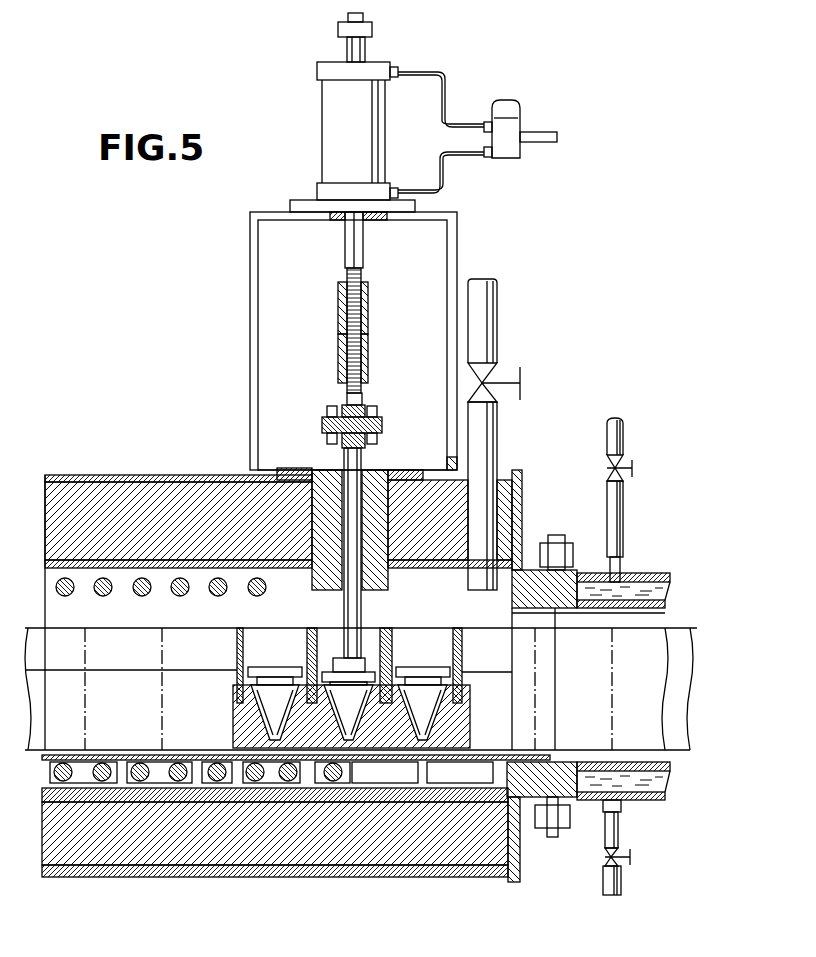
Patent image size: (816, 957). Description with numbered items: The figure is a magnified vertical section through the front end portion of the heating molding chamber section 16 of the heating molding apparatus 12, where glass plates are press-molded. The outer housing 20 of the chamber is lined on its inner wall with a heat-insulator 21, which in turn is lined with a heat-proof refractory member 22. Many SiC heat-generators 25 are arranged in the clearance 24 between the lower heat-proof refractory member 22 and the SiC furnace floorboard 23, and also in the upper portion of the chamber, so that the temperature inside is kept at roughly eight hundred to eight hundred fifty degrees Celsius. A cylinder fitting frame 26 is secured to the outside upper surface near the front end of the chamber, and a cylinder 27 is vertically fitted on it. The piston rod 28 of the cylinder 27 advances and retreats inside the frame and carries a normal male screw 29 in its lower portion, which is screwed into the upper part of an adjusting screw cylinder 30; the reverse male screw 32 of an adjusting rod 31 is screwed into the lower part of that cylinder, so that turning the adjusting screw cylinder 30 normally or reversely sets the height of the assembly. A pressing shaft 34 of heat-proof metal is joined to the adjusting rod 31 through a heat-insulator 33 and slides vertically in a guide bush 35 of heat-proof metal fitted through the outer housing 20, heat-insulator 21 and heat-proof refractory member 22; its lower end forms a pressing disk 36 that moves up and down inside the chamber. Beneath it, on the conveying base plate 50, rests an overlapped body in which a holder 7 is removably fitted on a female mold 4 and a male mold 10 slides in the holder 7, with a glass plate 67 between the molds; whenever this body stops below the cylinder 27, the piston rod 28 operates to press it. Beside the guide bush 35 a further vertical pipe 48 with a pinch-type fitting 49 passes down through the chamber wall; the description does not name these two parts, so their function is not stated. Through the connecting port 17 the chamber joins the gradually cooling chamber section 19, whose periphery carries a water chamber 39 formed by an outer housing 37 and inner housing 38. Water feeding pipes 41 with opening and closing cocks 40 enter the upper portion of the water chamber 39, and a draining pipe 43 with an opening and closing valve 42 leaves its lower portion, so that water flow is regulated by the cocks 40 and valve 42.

The female mold 4 is at (262, 725).
The holder 7 is at (237, 677).
The male mold 10 is at (292, 668).
The heating molding apparatus 12 is at (52, 475).
The heating molding chamber section 16 is at (157, 575).
The connecting port 17 is at (530, 570).
The gradually cooling chamber section 19 is at (654, 623).
The outer housing 20 is at (68, 475).
The heat-insulator 21 is at (112, 495).
The heat-proof refractory member 22 is at (178, 560).
The SiC furnace floorboard 23 is at (342, 706).
The clearance 24 is at (395, 778).
The SiC heat-generators 25 is at (66, 578).
The cylinder fitting frame 26 is at (250, 330).
The cylinder 27 is at (332, 128).
The piston rod 28 is at (365, 233).
The normal male screw 29 is at (340, 293).
The adjusting screw cylinder 30 is at (368, 310).
The adjusting rod 31 is at (345, 393).
The reverse male screw 32 is at (368, 347).
The heat-insulator 33 is at (325, 425).
The pressing shaft 34 is at (342, 452).
The guide bush 35 is at (314, 510).
The pressing disk 36 is at (430, 762).
The outer housing 37 is at (645, 573).
The inner housing 38 is at (590, 590).
The water chamber 39 is at (625, 590).
The opening and closing cock 40 is at (613, 469).
The water feeding pipe 41 is at (608, 501).
The opening and closing valve 42 is at (624, 860).
The draining pipe 43 is at (620, 828).
The feed pipe 48 is at (497, 428).
The pinch valve 49 is at (521, 383).
The conveying base plate 50 is at (590, 757).
The glass plate 67 is at (280, 690).